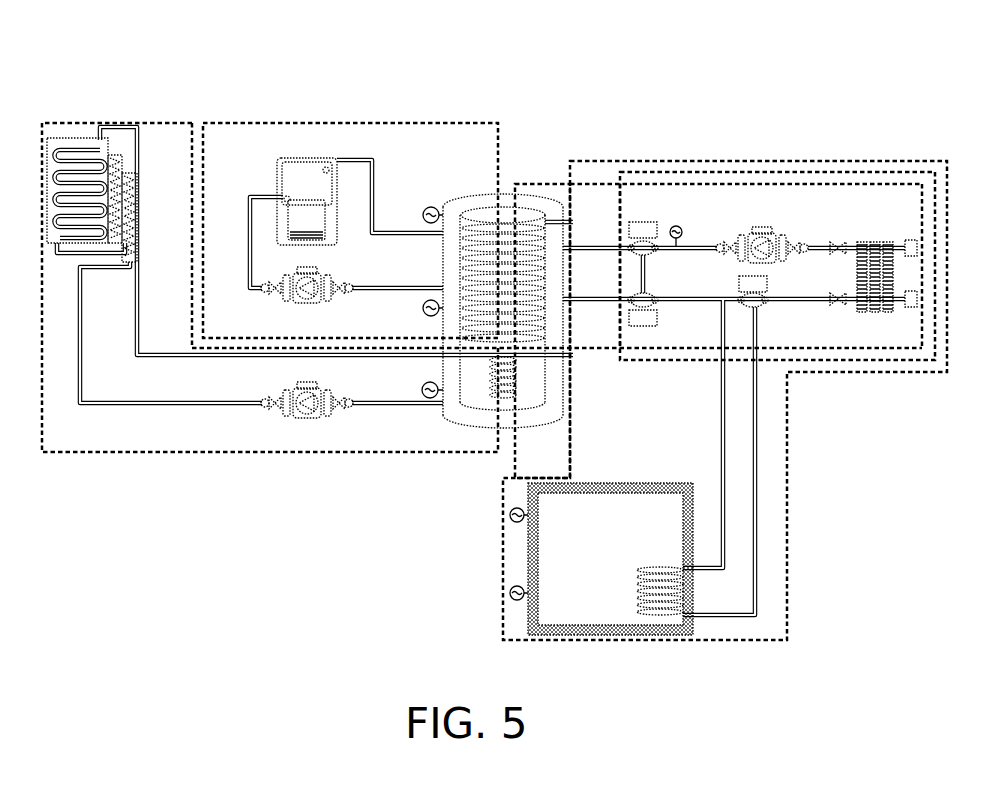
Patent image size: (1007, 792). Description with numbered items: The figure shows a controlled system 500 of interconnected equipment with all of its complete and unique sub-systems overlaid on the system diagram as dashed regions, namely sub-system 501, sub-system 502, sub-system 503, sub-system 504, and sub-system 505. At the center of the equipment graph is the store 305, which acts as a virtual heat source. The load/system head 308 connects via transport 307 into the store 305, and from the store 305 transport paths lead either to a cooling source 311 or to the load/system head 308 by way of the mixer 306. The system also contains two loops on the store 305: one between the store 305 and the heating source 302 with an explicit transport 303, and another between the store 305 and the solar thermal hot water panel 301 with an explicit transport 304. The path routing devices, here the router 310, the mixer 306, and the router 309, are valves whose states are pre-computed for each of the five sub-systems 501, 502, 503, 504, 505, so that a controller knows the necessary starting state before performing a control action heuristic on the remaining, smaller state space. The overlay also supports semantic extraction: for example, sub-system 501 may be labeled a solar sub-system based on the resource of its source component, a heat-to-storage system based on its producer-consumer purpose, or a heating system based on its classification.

The controlled system 500 is at (92, 48).
The sub-system 1 501 is at (170, 122).
The sub-system 2 502 is at (287, 122).
The sub-system 3 503 is at (740, 172).
The sub-system 4 504 is at (640, 161).
The sub-system 5 505 is at (556, 184).
The solar thermal hot water panel 301 is at (118, 200).
The heating source 302 is at (277, 172).
The transport 303 is at (275, 298).
The transport 304 is at (282, 410).
The store 305 is at (452, 203).
The mixer 306 is at (640, 230).
The transport 307 is at (752, 228).
The load/system head 308 is at (883, 250).
The router 309 is at (767, 296).
The router 310 is at (638, 316).
The cooling source 311 is at (527, 494).